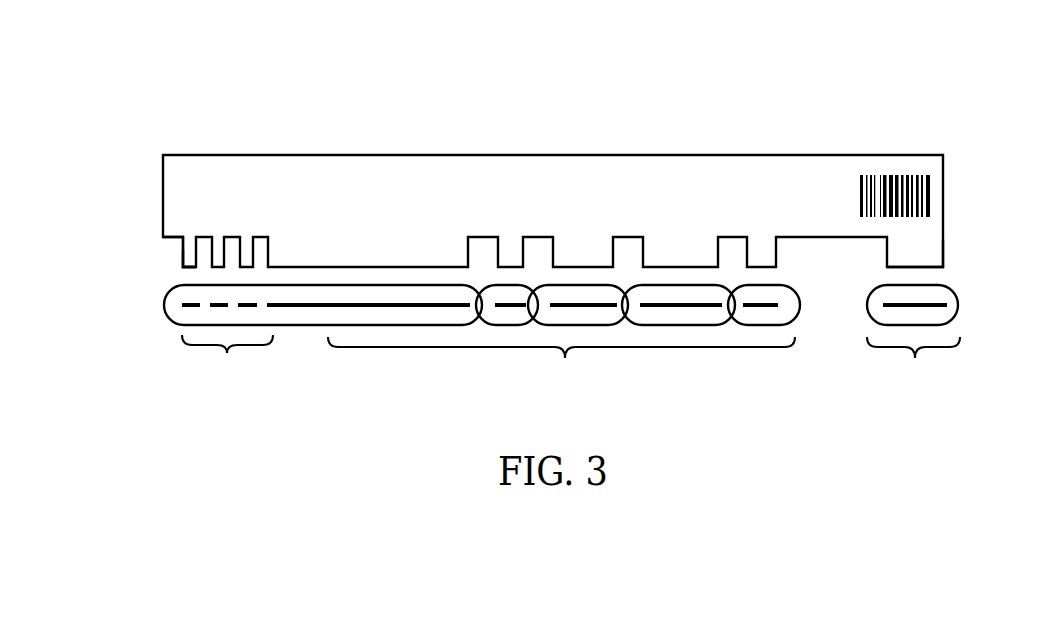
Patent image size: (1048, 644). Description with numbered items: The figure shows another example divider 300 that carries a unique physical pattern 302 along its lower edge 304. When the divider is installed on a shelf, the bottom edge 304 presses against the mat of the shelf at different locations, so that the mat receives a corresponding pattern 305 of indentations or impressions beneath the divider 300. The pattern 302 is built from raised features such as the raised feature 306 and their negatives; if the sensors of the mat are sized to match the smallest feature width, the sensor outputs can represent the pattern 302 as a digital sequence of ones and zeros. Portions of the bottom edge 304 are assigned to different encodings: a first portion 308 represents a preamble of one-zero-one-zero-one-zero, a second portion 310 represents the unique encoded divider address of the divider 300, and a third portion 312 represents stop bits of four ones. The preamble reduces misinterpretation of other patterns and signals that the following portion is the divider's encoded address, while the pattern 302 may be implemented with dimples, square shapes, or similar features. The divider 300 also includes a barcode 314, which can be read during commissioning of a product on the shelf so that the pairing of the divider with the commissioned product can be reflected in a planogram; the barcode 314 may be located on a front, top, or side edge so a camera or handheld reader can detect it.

The divider 300 is at (890, 78).
The physical pattern 302 is at (181, 247).
The lower edge 304 is at (933, 265).
The pattern of indentations 305 is at (153, 317).
The raised feature 306 is at (185, 263).
The first portion 308 is at (188, 335).
The second portion 310 is at (425, 340).
The third portion 312 is at (887, 340).
The barcode 314 is at (890, 173).